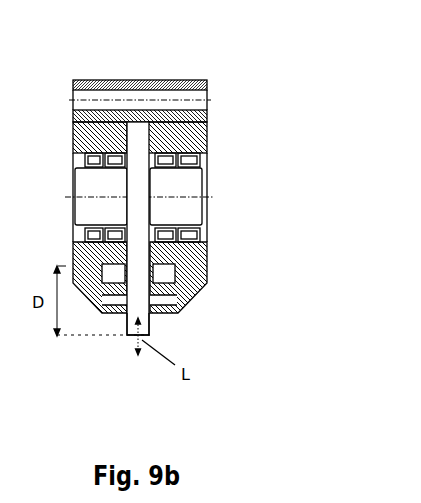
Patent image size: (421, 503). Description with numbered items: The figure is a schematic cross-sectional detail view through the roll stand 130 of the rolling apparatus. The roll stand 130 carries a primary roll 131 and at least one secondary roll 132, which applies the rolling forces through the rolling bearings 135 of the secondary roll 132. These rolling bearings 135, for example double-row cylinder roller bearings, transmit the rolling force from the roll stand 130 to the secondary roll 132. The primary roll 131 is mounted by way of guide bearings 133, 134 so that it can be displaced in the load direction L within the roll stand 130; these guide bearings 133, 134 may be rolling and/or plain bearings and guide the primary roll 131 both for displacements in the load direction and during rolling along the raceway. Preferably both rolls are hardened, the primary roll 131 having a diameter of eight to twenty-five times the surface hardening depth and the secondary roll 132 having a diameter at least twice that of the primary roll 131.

The roll stand 130 is at (232, 88).
The primary roll 131 is at (150, 330).
The secondary roll 132 is at (142, 220).
The guide bearing 133 is at (151, 288).
The guide bearing 134 is at (107, 315).
The rolling bearings 135 is at (193, 160).